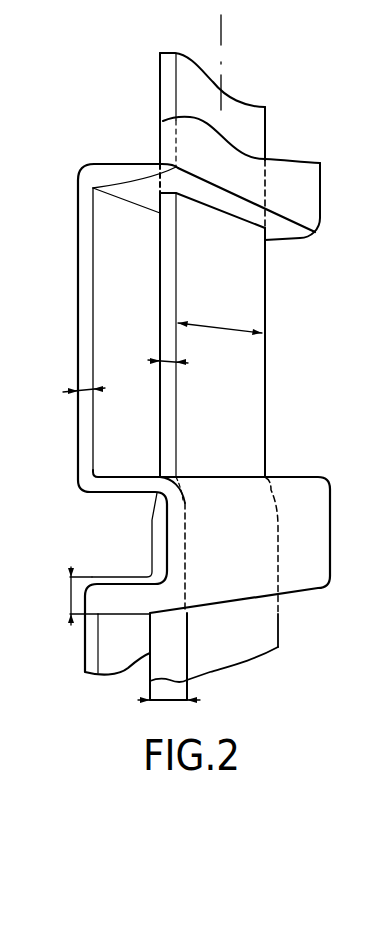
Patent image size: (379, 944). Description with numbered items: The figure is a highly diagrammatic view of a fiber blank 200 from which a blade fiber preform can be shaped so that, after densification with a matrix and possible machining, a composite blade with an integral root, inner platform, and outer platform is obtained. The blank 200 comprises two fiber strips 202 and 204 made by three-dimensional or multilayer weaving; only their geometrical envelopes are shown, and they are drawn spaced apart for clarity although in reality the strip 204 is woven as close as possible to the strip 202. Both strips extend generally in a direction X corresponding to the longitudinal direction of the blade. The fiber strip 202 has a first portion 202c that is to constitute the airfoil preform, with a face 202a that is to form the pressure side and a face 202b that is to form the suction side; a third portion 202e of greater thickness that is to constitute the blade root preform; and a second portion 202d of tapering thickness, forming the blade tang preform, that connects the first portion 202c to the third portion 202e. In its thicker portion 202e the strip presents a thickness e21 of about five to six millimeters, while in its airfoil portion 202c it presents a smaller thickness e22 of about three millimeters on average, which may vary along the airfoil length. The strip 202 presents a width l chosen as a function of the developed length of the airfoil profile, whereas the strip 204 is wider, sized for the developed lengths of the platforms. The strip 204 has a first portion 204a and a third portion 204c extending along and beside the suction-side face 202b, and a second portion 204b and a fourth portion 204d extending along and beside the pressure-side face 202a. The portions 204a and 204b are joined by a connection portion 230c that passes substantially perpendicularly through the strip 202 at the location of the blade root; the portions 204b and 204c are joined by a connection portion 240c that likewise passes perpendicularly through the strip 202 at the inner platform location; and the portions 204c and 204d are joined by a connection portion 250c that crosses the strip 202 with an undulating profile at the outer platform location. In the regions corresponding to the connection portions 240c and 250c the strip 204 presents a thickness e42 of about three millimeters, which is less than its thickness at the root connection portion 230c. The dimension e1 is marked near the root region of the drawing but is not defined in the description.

The fiber blank 200 is at (75, 120).
The fiber strip 202 is at (243, 391).
The face 202a is at (254, 440).
The face 202b is at (160, 406).
The first portion 202c is at (253, 278).
The second portion 202d is at (190, 506).
The third portion 202e is at (227, 653).
The fiber strip 204 is at (73, 252).
The first portion 204a is at (88, 646).
The second portion 204b is at (298, 563).
The third portion 204c is at (87, 297).
The fourth portion 204d is at (292, 176).
The connection portion 230c is at (118, 594).
The connection portion 240c is at (117, 484).
The connection portion 250c is at (122, 173).
The step height e1 is at (74, 596).
The thickness e21 is at (169, 711).
The thickness e22 is at (167, 360).
The thickness e42 is at (82, 387).
The direction X is at (223, 28).
The width l is at (220, 323).